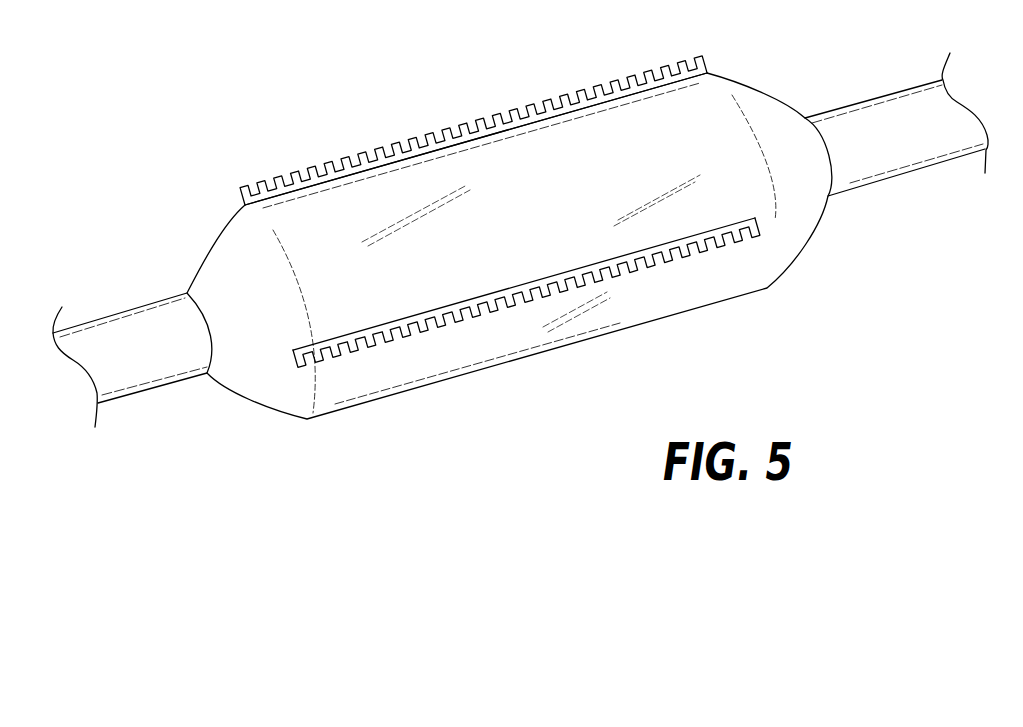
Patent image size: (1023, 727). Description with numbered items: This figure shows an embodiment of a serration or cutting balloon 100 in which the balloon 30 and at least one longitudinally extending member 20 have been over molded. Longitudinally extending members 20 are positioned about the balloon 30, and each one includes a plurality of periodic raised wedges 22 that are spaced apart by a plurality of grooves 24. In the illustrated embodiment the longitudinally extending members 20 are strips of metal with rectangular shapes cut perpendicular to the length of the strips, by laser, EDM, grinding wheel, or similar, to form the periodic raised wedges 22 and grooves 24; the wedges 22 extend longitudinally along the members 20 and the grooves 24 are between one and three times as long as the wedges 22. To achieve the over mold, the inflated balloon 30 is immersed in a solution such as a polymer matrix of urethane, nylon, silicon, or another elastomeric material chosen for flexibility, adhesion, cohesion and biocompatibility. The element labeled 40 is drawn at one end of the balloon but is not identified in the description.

The serration or cutting balloon 100 is at (543, 463).
The longitudinally extending member 20 is at (706, 66).
The periodic raised wedges 22 is at (506, 113).
The grooves 24 is at (486, 118).
The balloon 30 is at (657, 320).
The tube connector 40 is at (888, 96).